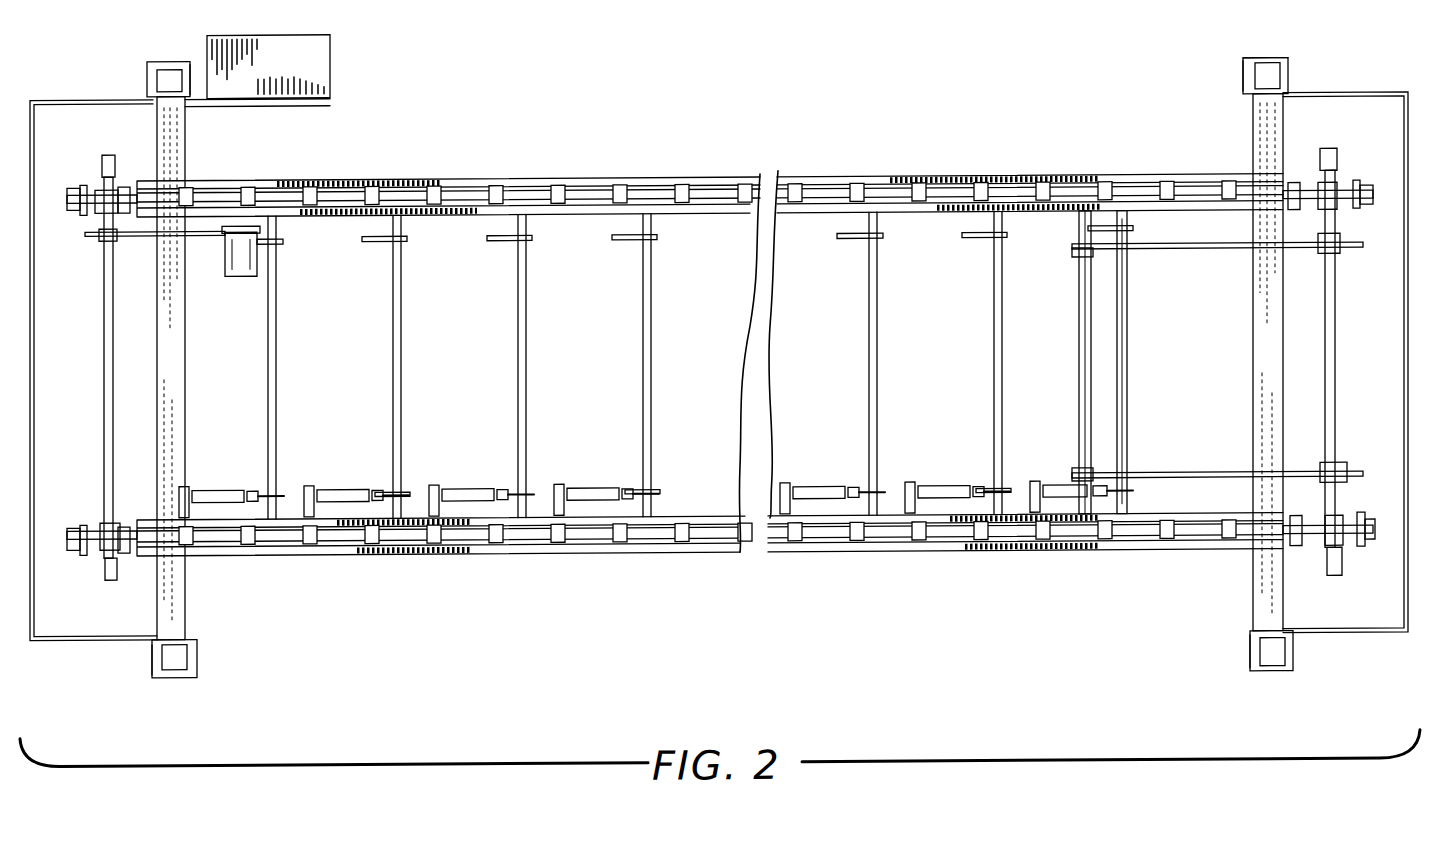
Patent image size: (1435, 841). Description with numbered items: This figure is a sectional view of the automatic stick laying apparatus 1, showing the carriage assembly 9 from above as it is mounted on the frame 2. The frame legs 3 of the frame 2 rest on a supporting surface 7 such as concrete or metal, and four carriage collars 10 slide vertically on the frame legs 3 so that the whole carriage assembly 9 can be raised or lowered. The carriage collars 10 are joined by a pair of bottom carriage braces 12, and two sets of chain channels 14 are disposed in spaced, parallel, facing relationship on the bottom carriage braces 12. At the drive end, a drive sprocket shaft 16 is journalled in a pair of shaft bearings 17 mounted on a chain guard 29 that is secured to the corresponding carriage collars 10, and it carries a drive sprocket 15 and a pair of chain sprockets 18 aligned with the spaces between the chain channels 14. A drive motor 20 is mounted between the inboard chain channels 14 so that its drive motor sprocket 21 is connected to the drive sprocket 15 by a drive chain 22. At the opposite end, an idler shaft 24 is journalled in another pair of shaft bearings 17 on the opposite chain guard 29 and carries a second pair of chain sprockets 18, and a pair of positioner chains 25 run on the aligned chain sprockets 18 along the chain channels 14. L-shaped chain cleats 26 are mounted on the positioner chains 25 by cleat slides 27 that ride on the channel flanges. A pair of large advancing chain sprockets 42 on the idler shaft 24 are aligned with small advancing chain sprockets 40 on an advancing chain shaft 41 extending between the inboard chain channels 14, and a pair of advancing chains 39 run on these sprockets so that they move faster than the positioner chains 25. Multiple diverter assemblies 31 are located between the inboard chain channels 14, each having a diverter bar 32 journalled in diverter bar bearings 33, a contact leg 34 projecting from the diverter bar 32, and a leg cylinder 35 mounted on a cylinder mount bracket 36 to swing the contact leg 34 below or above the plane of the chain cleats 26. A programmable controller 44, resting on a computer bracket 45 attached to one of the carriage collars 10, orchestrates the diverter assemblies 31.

The stick laying apparatus 1 is at (1153, 48).
The frame 2 is at (1268, 63).
The frame legs 3 is at (172, 62).
The supporting surface 7 is at (80, 424).
The carriage assembly 9 is at (202, 648).
The carriage collars 10 is at (147, 82).
The bottom carriage braces 12 is at (1285, 125).
The chain channels 14 is at (270, 182).
The drive sprocket 15 is at (92, 237).
The drive sprocket shaft 16 is at (104, 320).
The shaft bearings 17 is at (106, 155).
The chain sprockets 18 is at (95, 212).
The drive motor 20 is at (244, 265).
The drive motor sprocket 21 is at (223, 237).
The drive chain 22 is at (140, 241).
The idler shaft 24 is at (1336, 318).
The positioner chains 25 is at (648, 189).
The chain cleats 26 is at (76, 190).
The cleat slides 27 is at (735, 245).
The chain guard 29 is at (125, 622).
The diverter assemblies 31 is at (458, 490).
The diverter bar 32 is at (526, 305).
The diverter bar bearings 33 is at (283, 242).
The contact leg 34 is at (520, 245).
The leg cylinder 35 is at (590, 491).
The cylinder mount bracket 36 is at (188, 490).
The advancing chains 39 is at (1160, 256).
The small advancing chain sprockets 40 is at (1072, 260).
The advancing chain shaft 41 is at (1079, 308).
The large advancing chain sprockets 42 is at (1340, 258).
The programmable controller 44 is at (280, 74).
The computer bracket 45 is at (302, 108).